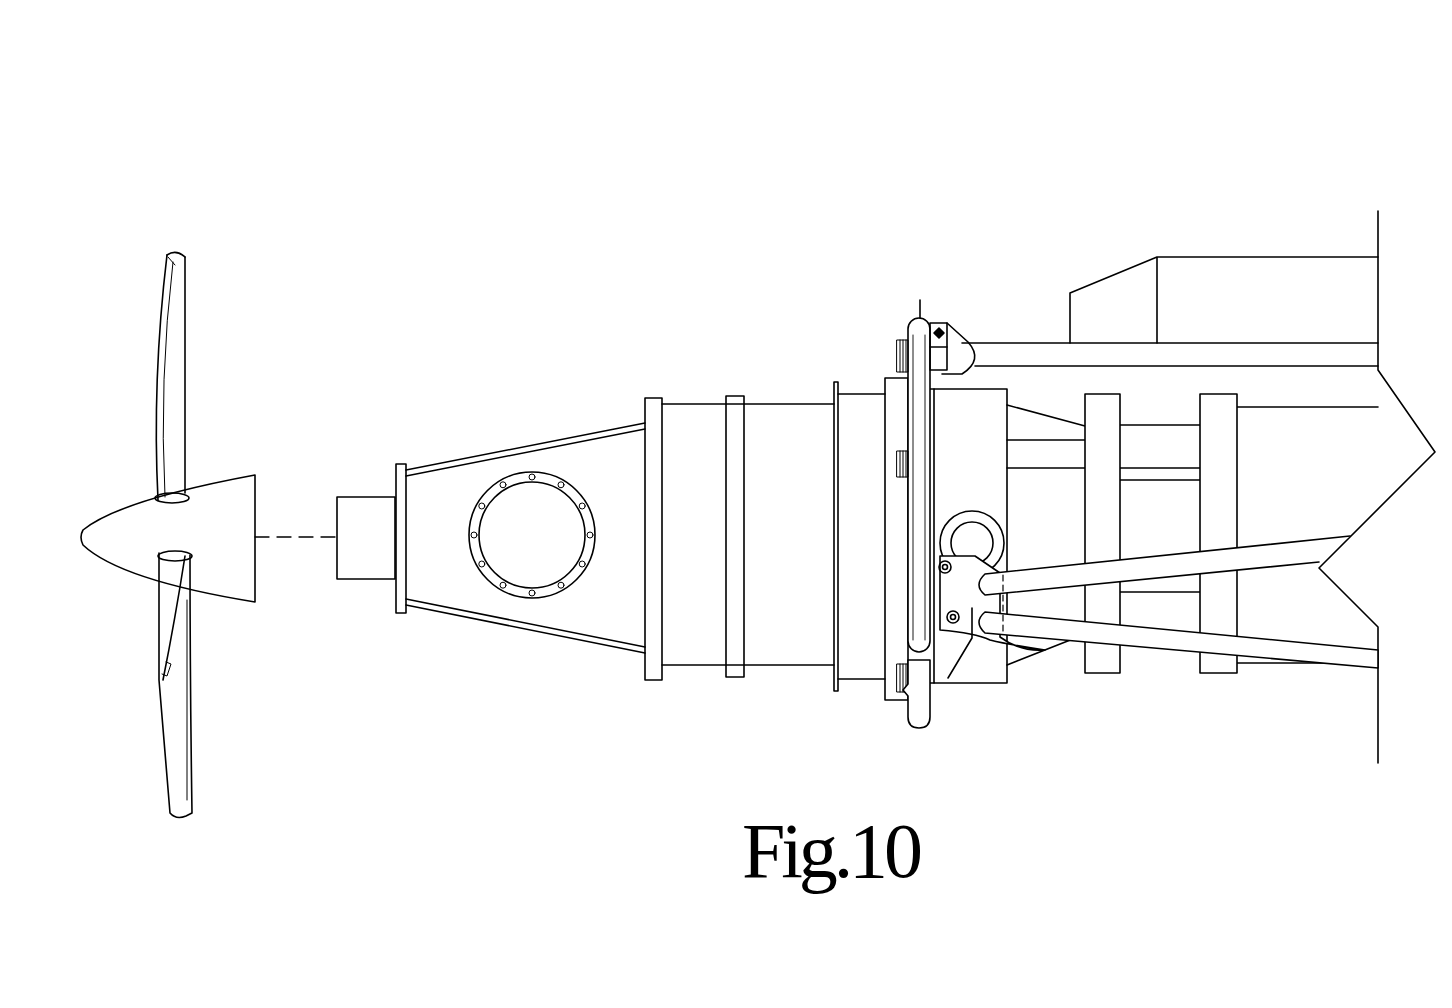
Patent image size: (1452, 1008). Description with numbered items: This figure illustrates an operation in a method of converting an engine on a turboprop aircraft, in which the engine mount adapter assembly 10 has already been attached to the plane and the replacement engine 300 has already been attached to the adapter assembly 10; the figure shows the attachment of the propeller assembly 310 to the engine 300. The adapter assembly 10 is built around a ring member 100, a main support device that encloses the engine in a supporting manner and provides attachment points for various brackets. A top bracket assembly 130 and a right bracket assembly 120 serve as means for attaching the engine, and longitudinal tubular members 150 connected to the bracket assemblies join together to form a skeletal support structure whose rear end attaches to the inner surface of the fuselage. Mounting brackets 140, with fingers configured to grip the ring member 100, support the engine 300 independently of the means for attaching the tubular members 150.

The engine mount adapter assembly 10 is at (1250, 194).
The ring member 100 is at (920, 718).
The right bracket assembly 120 is at (1005, 662).
The top bracket assembly 130 is at (962, 350).
The mounting bracket 140 is at (912, 322).
The tubular members 150 is at (1348, 357).
The engine 300 is at (440, 520).
The propeller assembly 310 is at (232, 382).